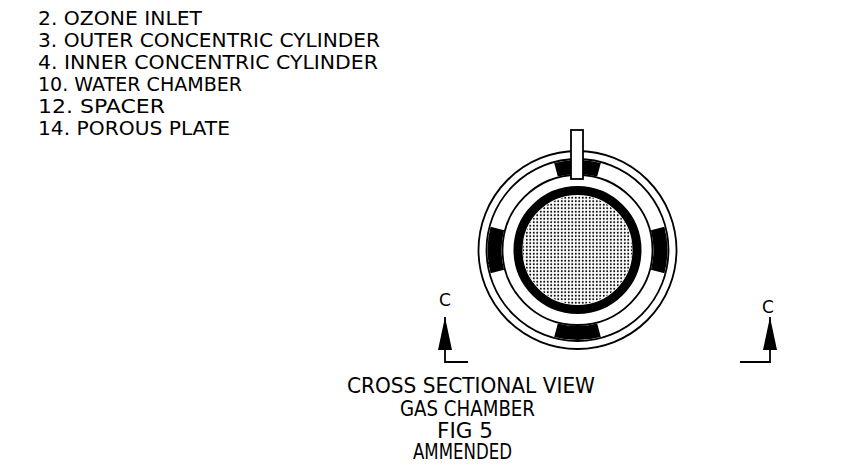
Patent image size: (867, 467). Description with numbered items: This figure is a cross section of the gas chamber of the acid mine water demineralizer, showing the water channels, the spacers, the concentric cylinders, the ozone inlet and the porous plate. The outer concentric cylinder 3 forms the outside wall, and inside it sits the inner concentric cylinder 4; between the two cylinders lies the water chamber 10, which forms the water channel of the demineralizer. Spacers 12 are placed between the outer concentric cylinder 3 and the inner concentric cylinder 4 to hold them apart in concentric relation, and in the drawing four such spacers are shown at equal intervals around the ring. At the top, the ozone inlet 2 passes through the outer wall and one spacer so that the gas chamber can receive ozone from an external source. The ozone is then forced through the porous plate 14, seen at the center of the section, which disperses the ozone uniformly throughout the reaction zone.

The ozone inlet 2 is at (570, 129).
The outer concentric cylinder 3 is at (492, 198).
The inner concentric cylinder 4 is at (630, 185).
The water chamber 10 is at (523, 178).
The spacer 12 is at (485, 238).
The porous plate 14 is at (628, 261).